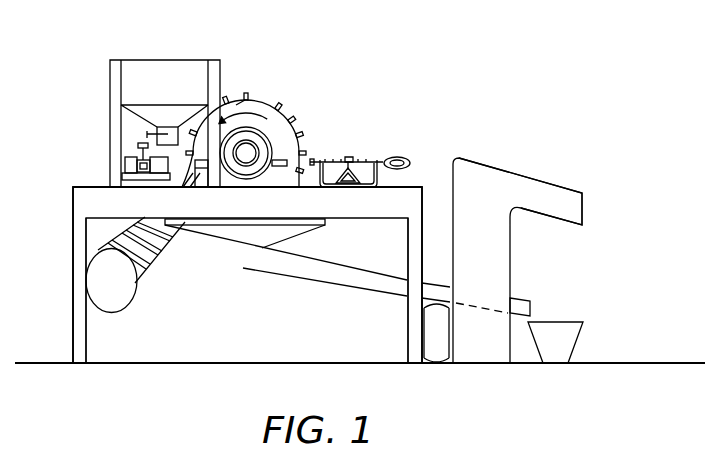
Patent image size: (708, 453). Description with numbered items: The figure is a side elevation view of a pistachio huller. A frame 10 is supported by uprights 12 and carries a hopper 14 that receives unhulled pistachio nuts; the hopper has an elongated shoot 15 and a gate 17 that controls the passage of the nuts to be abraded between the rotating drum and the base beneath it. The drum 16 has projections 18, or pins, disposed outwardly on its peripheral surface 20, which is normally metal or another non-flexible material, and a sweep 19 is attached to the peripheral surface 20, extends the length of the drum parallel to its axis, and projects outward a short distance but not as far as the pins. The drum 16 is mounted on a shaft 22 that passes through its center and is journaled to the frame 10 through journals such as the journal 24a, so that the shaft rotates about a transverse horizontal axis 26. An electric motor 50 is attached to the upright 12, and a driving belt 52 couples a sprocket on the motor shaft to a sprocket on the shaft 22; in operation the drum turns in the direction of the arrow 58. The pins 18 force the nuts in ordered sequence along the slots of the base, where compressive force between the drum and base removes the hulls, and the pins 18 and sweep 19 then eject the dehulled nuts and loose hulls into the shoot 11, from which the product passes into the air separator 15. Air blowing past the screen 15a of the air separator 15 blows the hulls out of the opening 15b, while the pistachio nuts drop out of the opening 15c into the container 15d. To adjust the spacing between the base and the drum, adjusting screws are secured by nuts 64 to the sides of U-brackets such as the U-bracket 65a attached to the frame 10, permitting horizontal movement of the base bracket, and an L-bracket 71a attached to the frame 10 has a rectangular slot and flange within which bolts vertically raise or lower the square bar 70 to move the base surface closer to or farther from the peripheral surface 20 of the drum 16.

The frame 10 is at (76, 187).
The shoot 11 is at (242, 240).
The uprights 12 is at (78, 295).
The hopper 14 is at (128, 85).
The air separator 15 is at (158, 108).
The screen 15a is at (490, 309).
The opening 15b is at (583, 220).
The opening 15c is at (532, 314).
The container 15d is at (582, 343).
The drum 16 is at (282, 106).
The gate 17 is at (143, 134).
The projections 18 is at (246, 98).
The sweep 19 is at (273, 103).
The peripheral surface 20 is at (288, 112).
The shaft 22 is at (245, 160).
The journal 24a is at (288, 186).
The axis 26 is at (252, 150).
The electric motor 50 is at (123, 307).
The driving belt 52 is at (168, 257).
The arrow 58 is at (236, 105).
The nuts 64 is at (313, 157).
The U-bracket 65a is at (384, 158).
The square bar 70 is at (138, 147).
The L-bracket 71a is at (127, 170).